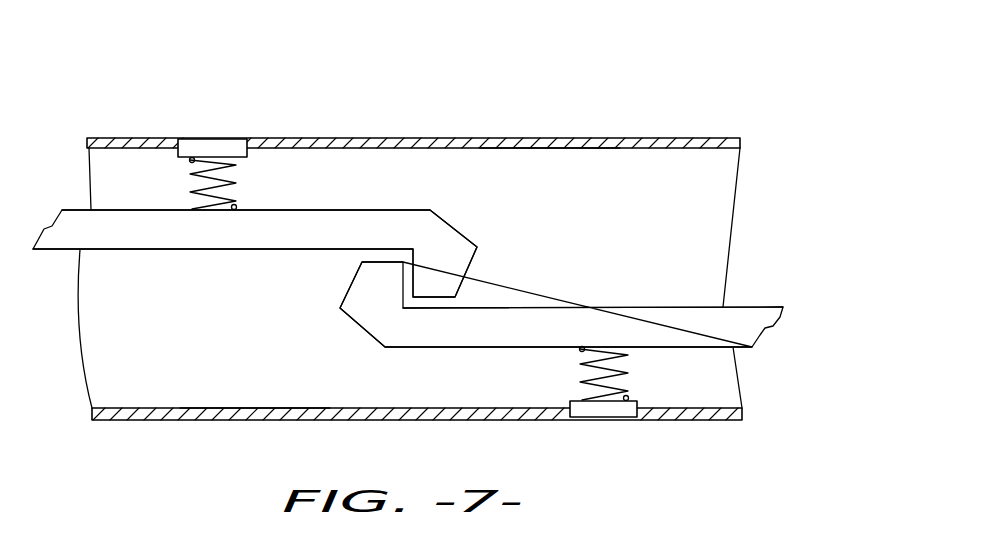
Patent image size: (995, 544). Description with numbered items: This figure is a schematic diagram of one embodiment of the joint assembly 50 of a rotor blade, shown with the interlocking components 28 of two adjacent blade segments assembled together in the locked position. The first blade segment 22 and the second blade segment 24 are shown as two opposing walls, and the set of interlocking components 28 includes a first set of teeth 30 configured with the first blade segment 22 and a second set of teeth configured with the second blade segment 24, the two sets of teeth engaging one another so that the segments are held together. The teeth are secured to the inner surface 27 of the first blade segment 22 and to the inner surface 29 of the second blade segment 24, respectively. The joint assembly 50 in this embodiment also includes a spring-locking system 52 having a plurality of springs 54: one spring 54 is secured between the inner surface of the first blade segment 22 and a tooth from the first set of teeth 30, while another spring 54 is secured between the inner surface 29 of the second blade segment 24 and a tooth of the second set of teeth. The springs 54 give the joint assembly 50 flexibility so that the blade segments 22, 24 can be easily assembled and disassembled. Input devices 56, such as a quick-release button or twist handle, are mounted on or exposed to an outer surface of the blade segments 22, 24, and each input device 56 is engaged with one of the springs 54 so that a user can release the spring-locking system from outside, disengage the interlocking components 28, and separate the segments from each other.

The joint assembly 50 is at (690, 102).
The first blade segment 22 is at (418, 138).
The second blade segment 24 is at (692, 420).
The inner surface of the first blade segment 27 is at (587, 150).
The inner surface of the second blade segment 29 is at (257, 408).
The interlocking components 28 is at (190, 252).
The first set of teeth 30 is at (260, 230).
The spring-locking system 52 is at (177, 185).
The springs 54 is at (240, 184).
The input devices 56 is at (215, 139).